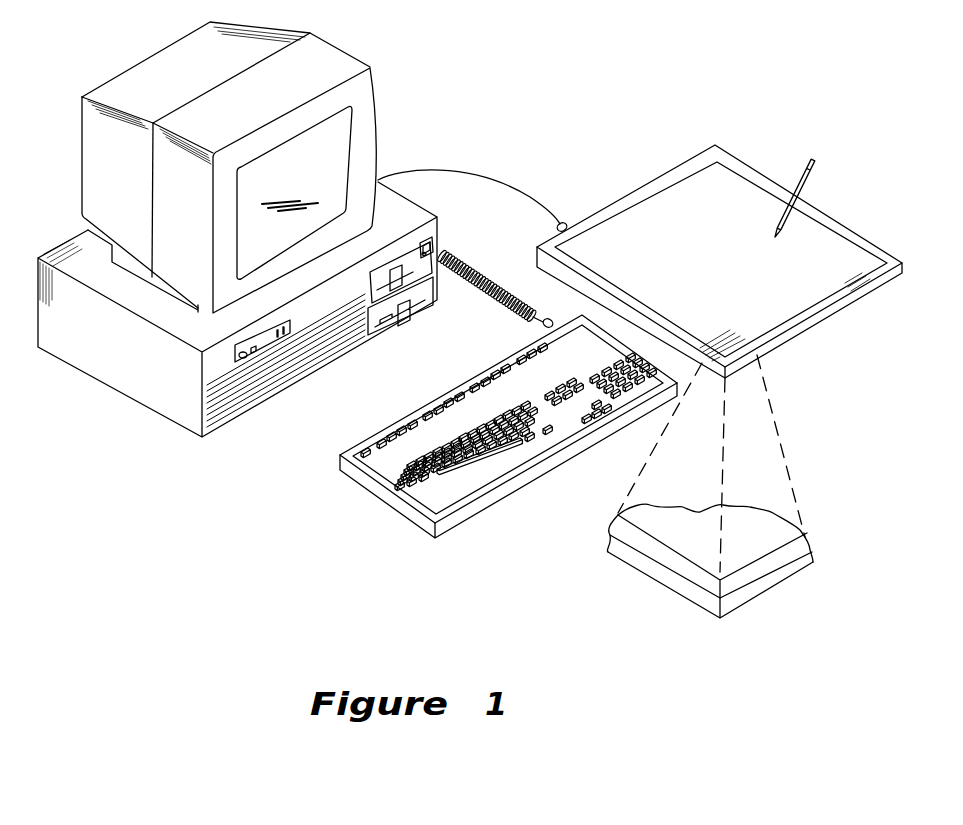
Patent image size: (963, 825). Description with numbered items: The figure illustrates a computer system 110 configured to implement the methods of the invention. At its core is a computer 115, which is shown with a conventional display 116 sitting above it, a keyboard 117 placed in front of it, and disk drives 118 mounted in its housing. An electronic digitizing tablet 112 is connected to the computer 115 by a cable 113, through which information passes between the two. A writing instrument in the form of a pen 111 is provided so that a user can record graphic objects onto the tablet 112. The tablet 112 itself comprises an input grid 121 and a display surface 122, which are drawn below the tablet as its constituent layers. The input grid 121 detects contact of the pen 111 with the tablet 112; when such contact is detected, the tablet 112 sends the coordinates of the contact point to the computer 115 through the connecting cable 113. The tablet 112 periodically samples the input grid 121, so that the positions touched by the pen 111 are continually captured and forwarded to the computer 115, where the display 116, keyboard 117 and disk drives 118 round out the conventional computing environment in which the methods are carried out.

The computer system 110 is at (478, 98).
The pen 111 is at (803, 178).
The electronic digitizing tablet 112 is at (730, 250).
The cable 113 is at (533, 190).
The computer 115 is at (185, 325).
The display 116 is at (318, 145).
The keyboard 117 is at (387, 465).
The disk drives 118 is at (357, 288).
The input grid 121 is at (643, 542).
The display surface 122 is at (697, 600).